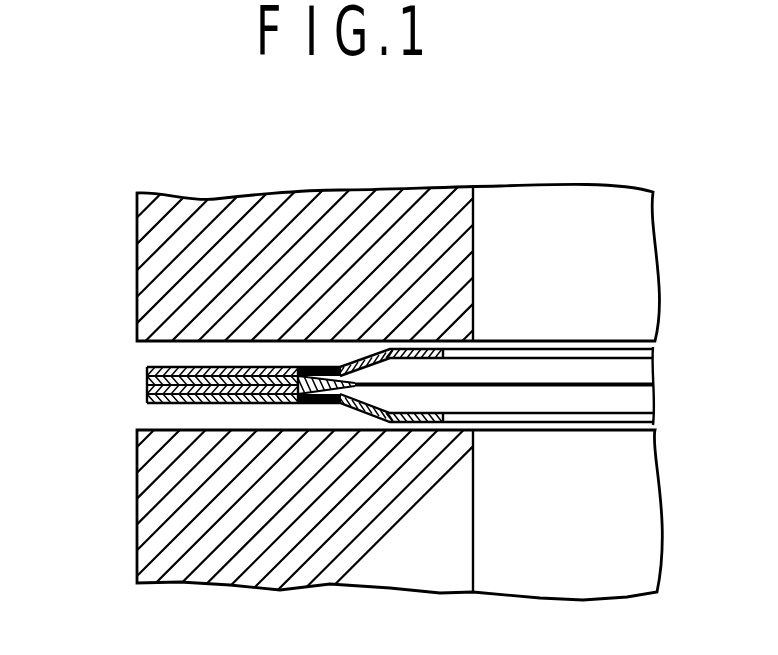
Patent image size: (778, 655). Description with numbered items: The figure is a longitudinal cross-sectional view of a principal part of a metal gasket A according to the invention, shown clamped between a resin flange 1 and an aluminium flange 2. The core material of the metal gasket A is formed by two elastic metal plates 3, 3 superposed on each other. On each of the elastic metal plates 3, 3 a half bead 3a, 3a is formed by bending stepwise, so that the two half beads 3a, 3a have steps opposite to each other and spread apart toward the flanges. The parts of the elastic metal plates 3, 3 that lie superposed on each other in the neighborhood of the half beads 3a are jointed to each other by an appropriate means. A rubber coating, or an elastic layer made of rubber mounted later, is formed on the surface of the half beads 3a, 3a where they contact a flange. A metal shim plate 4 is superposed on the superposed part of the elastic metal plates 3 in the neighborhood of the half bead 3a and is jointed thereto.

The resin flange 1 is at (208, 203).
The aluminium flange 2 is at (208, 570).
The elastic metal plate 3 is at (147, 392).
The half bead 3a is at (366, 357).
The metal shim plate 4 is at (149, 367).
The metal gasket A is at (664, 353).